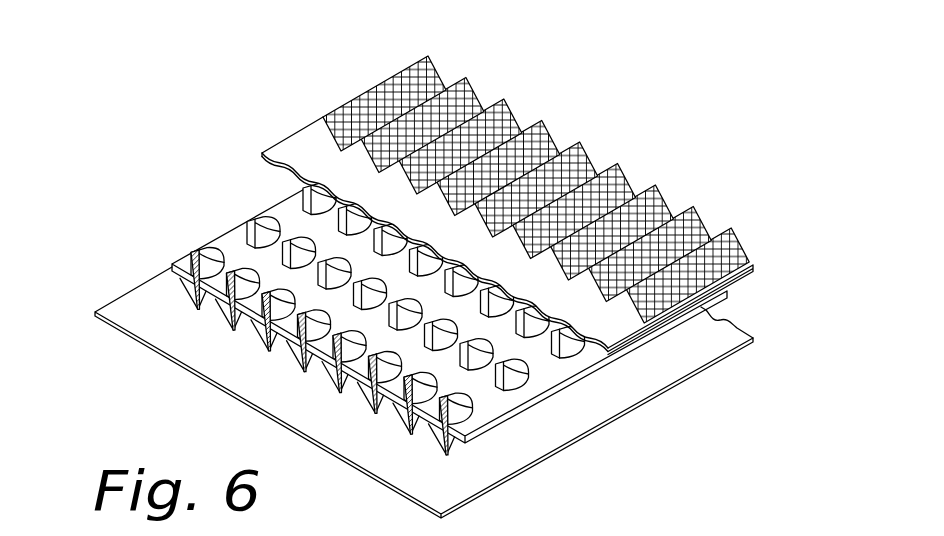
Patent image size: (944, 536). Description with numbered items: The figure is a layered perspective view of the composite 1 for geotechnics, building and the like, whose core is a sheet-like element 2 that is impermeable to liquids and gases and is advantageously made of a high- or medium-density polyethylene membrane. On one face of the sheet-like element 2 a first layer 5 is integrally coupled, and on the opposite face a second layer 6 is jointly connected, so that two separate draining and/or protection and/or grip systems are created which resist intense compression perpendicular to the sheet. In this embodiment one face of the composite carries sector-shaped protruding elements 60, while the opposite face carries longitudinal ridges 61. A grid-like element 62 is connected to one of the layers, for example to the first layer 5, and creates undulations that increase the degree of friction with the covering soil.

The composite 1 is at (143, 141).
The sheet-like element 2 is at (228, 240).
The first layer 5 is at (288, 139).
The second layer 6 is at (133, 309).
The sector-shaped protruding elements 60 is at (265, 226).
The longitudinal ridges 61 is at (198, 311).
The grid-like element 62 is at (400, 83).